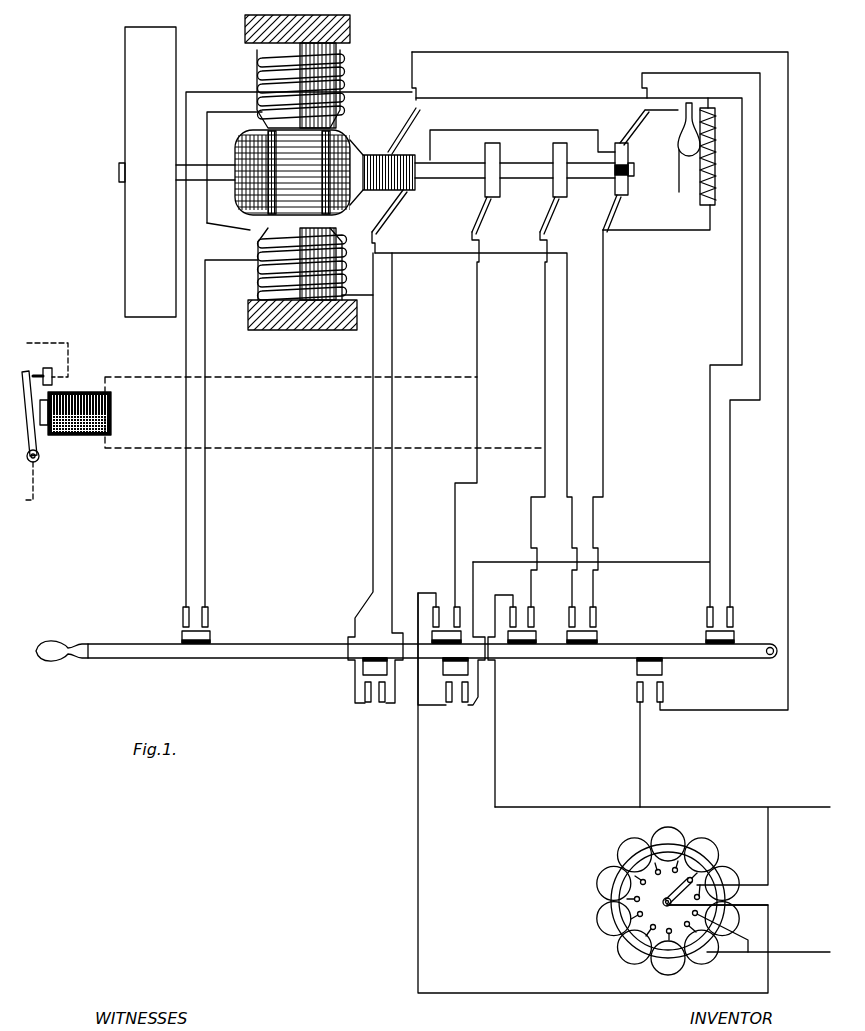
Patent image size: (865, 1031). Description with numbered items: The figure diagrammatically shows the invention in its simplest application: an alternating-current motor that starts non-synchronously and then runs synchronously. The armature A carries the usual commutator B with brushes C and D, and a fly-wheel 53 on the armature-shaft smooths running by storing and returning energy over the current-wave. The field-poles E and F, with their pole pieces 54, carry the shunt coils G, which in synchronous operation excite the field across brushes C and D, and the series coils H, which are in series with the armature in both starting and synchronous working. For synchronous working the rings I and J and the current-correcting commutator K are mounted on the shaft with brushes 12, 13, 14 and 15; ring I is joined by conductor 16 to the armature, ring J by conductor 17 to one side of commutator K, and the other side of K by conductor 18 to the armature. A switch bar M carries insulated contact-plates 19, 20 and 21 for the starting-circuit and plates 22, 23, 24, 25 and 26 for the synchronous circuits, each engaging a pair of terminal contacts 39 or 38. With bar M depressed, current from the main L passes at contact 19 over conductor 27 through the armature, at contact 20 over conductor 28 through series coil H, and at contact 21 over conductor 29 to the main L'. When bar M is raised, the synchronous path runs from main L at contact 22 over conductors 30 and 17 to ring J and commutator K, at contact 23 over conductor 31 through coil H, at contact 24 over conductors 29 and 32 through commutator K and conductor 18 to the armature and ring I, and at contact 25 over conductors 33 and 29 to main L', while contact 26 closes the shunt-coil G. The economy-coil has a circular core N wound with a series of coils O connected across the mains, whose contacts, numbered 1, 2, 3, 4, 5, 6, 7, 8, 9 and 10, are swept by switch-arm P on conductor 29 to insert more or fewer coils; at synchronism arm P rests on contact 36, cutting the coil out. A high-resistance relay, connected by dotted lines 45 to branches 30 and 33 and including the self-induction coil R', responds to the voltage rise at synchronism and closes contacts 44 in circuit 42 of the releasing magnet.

The fly-wheel 53 is at (177, 172).
The field magnet pole piece 54 is at (350, 26).
The shunt coils G is at (336, 70).
The series coils H is at (333, 113).
The field-pole E is at (335, 124).
The field-pole F is at (262, 238).
The armature A is at (236, 136).
The commutator B is at (400, 194).
The brush C is at (419, 118).
The brush D is at (380, 228).
The conductor 16 is at (450, 185).
The conductor 17 is at (591, 185).
The ring I is at (500, 148).
The ring J is at (553, 192).
The current-correcting commutator K is at (628, 190).
The conductor 18 is at (475, 127).
The brush 15 is at (649, 127).
The brush 12 is at (492, 215).
The brush 13 is at (548, 222).
The brush 14 is at (610, 222).
The self-induction coil R' is at (659, 164).
The conductor 29 is at (512, 99).
The conductor 32 is at (757, 352).
The conductor 27 is at (785, 372).
The conductor 33 is at (476, 340).
The conductor 30 is at (544, 343).
The conductor 31 is at (567, 367).
The conductor 28 is at (375, 478).
The circuit 42 is at (36, 512).
The contacts 44 is at (37, 366).
The dotted-line connections 45 is at (258, 380).
The terminal contacts 38 is at (186, 607).
The contact-plate 26 is at (210, 632).
The contact-plate 25 is at (446, 630).
The contact-plate 22 is at (536, 632).
The contact-plate 23 is at (597, 632).
The contact-plate 24 is at (734, 632).
The bar M is at (406, 659).
The contact-plate 20 is at (375, 666).
The contact-plate 21 is at (451, 633).
The contact-plate 19 is at (649, 666).
The terminal contacts 39 is at (514, 704).
The main L is at (662, 834).
The main L' is at (768, 943).
The circular core N is at (610, 903).
The coils O is at (610, 870).
The switch-arm P is at (709, 895).
The contact 36 is at (711, 927).
The rheostat contact 1 is at (688, 932).
The rheostat contact 2 is at (670, 925).
The rheostat contact 3 is at (652, 921).
The rheostat contact 4 is at (642, 910).
The rheostat contact 5 is at (638, 897).
The rheostat contact 6 is at (645, 884).
The rheostat contact 7 is at (656, 874).
The rheostat contact 8 is at (672, 873).
The rheostat contact 9 is at (690, 870).
The rheostat contact 10 is at (700, 888).